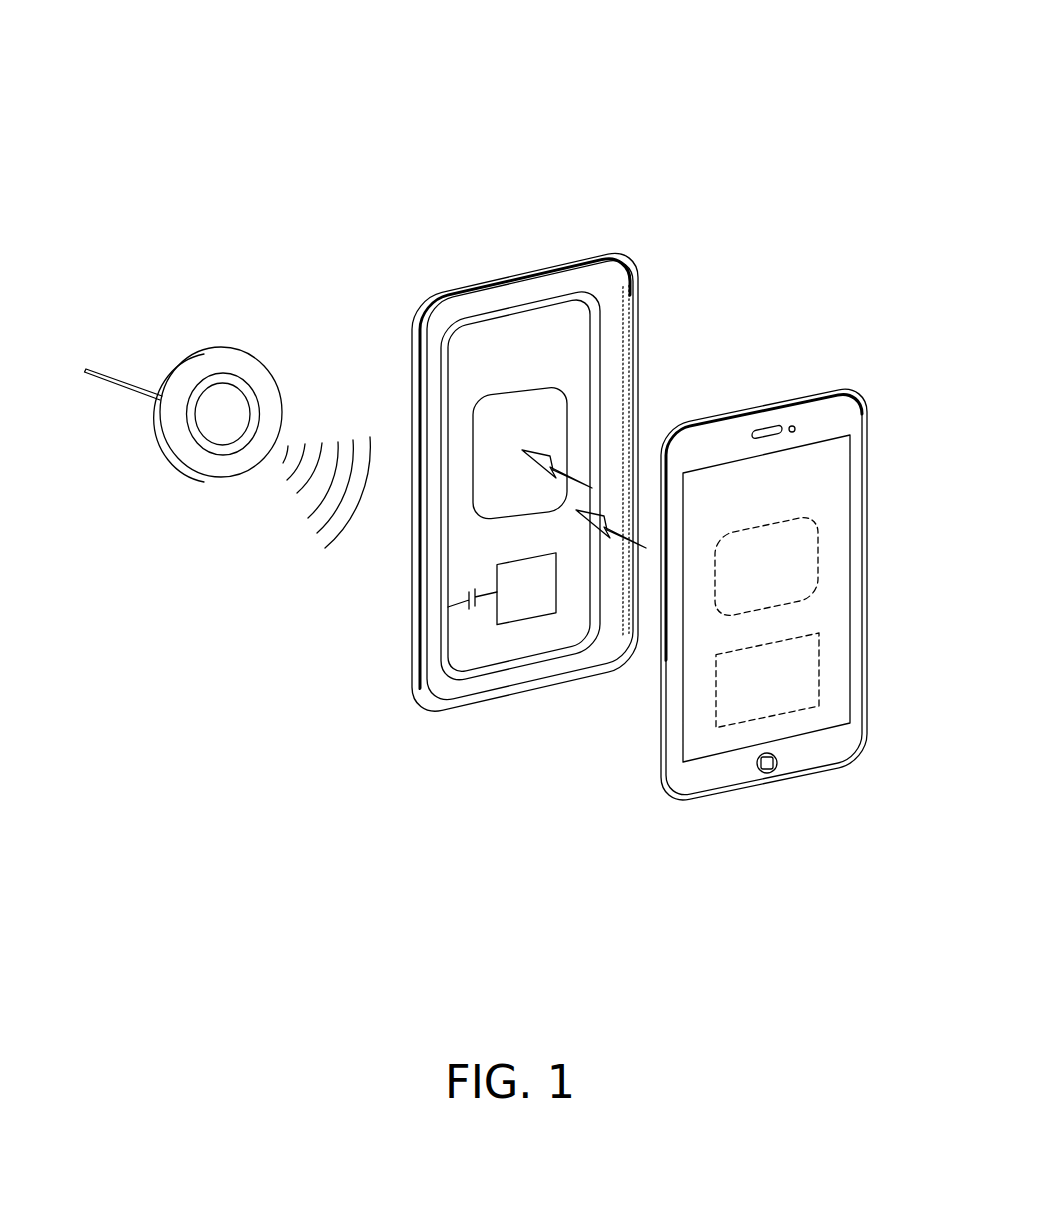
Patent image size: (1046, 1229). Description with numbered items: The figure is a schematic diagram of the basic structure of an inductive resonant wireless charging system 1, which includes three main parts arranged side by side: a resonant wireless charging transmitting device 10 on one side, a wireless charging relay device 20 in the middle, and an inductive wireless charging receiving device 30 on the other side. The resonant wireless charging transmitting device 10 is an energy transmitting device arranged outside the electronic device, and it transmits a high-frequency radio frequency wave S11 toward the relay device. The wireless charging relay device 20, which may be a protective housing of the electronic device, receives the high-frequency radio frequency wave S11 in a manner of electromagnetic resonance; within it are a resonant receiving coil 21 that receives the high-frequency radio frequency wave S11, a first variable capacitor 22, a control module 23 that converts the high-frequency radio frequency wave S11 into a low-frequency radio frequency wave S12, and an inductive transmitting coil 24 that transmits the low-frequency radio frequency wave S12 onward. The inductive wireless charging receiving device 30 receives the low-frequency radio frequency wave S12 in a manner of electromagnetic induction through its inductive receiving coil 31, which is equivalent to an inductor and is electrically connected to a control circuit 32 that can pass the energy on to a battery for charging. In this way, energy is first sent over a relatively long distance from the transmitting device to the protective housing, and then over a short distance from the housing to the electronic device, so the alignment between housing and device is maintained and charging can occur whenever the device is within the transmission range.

The inductive resonant wireless charging system 1 is at (537, 63).
The resonant wireless charging transmitting device 10 is at (208, 467).
The high-frequency radio frequency wave S11 is at (308, 502).
The wireless charging relay device 20 is at (517, 485).
The resonant receiving coil 21 is at (514, 308).
The first variable capacitor 22 is at (472, 610).
The control module 23 is at (525, 620).
The inductive transmitting coil 24 is at (513, 395).
The low-frequency radio frequency wave S12 is at (562, 458).
The inductive wireless charging receiving device 30 is at (860, 592).
The inductive receiving coil 31 is at (808, 556).
The control circuit 32 is at (810, 672).